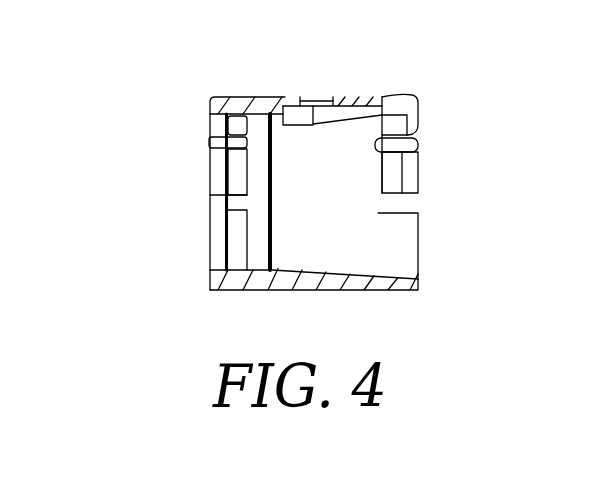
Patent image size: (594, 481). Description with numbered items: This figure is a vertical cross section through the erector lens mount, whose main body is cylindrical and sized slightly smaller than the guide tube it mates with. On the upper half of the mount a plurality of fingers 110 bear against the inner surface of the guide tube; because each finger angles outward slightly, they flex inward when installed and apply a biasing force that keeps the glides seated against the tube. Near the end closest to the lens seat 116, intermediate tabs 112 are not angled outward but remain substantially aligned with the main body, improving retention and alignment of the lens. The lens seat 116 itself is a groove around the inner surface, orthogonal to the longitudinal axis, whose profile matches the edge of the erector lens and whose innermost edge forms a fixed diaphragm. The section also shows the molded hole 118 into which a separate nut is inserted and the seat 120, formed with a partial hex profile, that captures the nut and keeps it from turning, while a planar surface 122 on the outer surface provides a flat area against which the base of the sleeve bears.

The fingers 110 is at (213, 93).
The intermediate tabs 112 is at (220, 94).
The lens seat 116 is at (245, 252).
The hole 118 is at (324, 100).
The seat 120 is at (302, 120).
The planar surface 122 is at (299, 98).